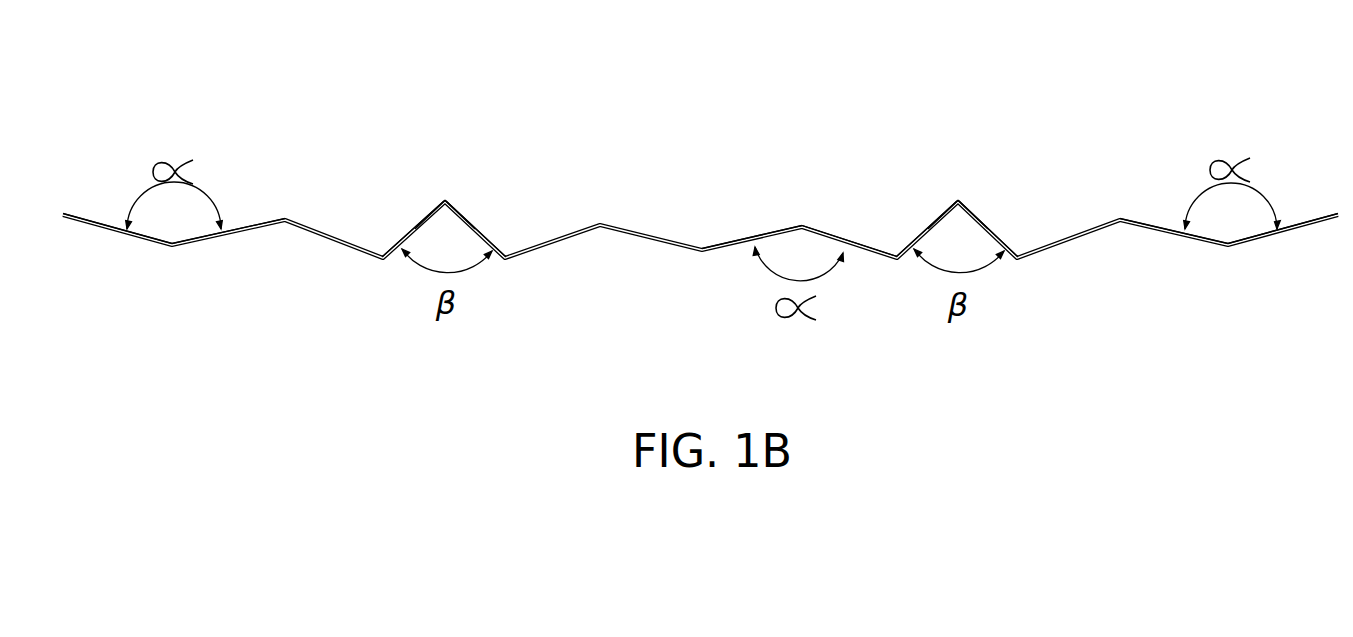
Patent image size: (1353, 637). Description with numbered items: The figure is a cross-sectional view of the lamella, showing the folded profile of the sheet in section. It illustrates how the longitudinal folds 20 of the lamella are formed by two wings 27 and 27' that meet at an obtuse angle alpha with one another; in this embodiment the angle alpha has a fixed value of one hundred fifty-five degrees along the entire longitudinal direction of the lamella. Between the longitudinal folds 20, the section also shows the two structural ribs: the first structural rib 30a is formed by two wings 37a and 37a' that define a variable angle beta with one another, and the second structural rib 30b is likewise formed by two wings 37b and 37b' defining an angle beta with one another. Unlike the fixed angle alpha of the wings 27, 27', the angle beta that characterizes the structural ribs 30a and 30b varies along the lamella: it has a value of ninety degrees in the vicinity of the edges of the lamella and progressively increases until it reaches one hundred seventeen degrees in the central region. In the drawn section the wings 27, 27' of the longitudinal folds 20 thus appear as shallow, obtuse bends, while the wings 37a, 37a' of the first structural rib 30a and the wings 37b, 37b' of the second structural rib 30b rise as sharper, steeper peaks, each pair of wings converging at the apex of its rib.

The longitudinal folds 20 is at (173, 245).
The wing 27 is at (645, 244).
The wing 27' is at (755, 242).
The first structural rib 30a is at (445, 200).
The wing 37a is at (399, 186).
The wing 37a' is at (499, 187).
The second structural rib 30b is at (958, 200).
The wing 37b is at (917, 187).
The wing 37b' is at (1010, 188).